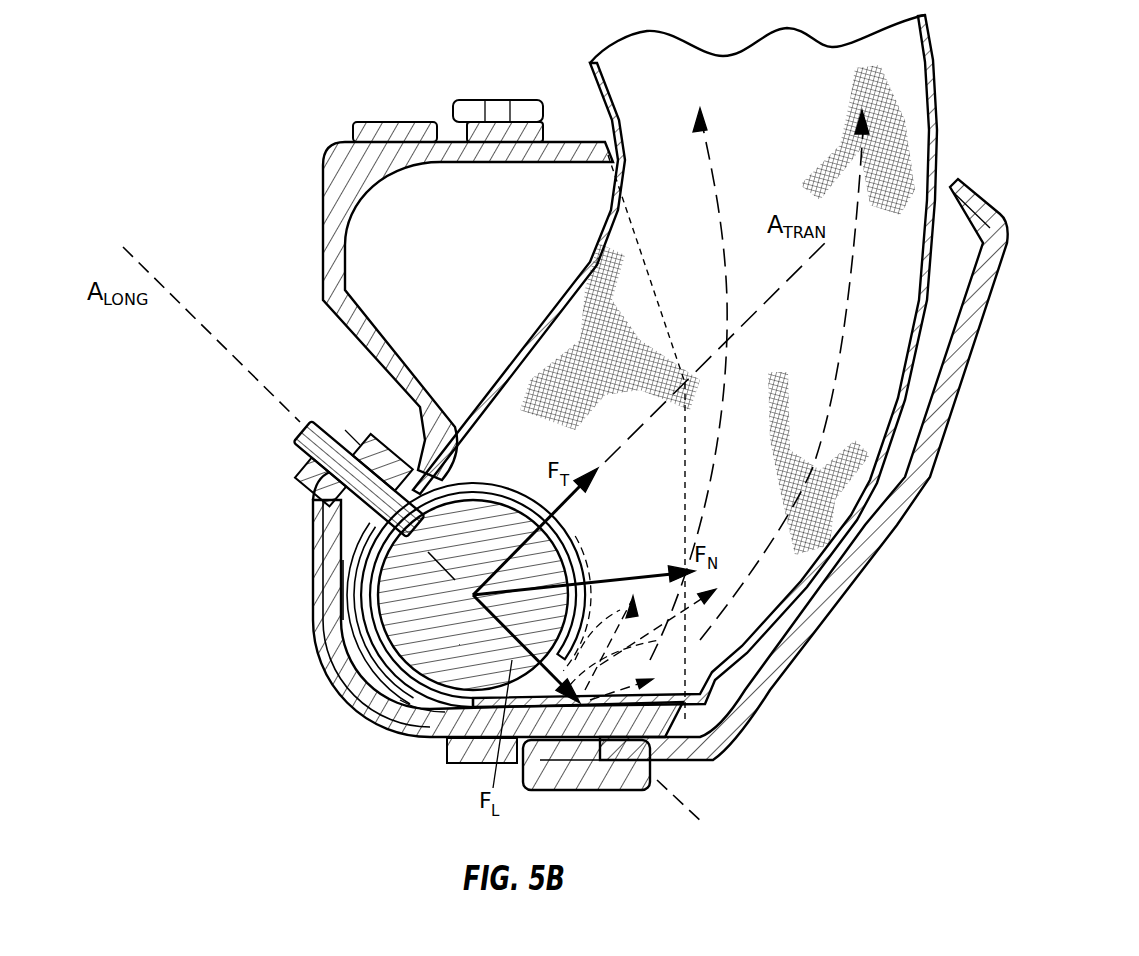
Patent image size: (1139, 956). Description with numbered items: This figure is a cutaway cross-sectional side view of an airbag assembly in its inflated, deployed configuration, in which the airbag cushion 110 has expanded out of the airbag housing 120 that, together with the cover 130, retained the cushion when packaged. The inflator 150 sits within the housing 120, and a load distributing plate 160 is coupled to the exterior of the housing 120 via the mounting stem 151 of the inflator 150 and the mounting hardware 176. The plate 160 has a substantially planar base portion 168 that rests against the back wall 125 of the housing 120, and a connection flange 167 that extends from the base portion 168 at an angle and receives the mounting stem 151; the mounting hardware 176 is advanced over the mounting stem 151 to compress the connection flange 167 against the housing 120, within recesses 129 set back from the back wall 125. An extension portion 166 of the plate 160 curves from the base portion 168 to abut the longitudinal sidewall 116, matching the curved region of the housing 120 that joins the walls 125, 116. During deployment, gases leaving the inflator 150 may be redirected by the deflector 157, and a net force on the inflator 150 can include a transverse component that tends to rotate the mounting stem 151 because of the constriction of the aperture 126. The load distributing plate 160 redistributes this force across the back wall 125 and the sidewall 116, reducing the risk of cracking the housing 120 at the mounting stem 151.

The airbag cushion 110 is at (932, 97).
The airbag housing 120 is at (341, 192).
The back wall 125 is at (338, 640).
The aperture 126 is at (343, 568).
The recesses 129 is at (338, 350).
The cover 130 is at (944, 417).
The inflator 150 is at (558, 628).
The mounting stem 151 is at (318, 428).
The deflector 157 is at (403, 726).
The load distributing plate 160 is at (318, 590).
The extension portion 166 is at (340, 698).
The connection flange 167 is at (348, 435).
The base portion 168 is at (320, 553).
The mounting hardware 176 is at (300, 488).
The longitudinal sidewall 116 is at (445, 727).